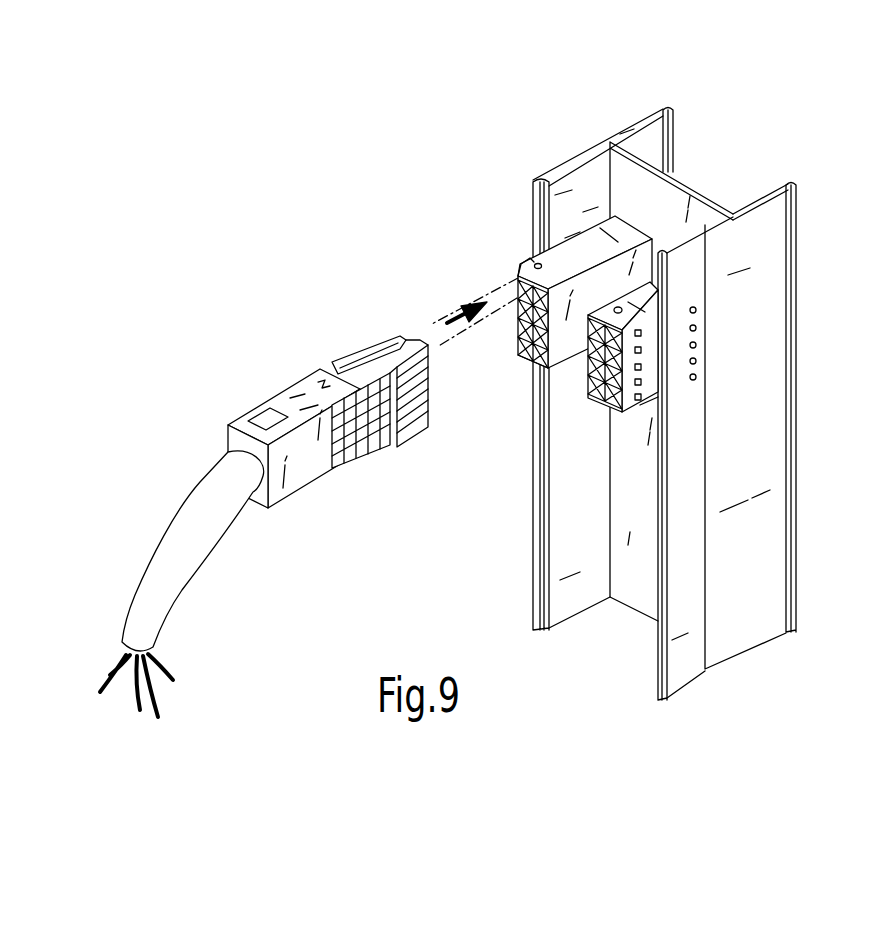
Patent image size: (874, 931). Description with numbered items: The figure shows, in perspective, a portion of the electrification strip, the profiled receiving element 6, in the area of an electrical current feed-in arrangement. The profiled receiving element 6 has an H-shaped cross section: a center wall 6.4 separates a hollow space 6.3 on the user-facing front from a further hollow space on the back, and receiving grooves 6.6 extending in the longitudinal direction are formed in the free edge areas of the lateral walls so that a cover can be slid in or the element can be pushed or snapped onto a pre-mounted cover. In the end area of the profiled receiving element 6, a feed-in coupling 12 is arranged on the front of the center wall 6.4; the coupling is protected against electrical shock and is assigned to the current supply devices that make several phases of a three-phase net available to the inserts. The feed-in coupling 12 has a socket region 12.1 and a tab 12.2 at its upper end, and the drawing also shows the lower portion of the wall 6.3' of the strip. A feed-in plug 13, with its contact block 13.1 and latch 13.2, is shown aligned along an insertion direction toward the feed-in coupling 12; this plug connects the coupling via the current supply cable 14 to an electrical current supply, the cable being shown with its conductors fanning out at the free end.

The profiled receiving element 6 is at (657, 404).
The hollow space 6.3 is at (649, 342).
The lower plate of housing frame 6.3' is at (656, 485).
The center wall 6.4 is at (638, 593).
The receiving grooves 6.6 is at (786, 184).
The feed-in coupling 12 is at (550, 285).
The socket contacts of connection module 12.1 is at (523, 358).
The latching tab of connection module 12.2 is at (536, 262).
The feed-in plug 13 is at (357, 386).
The contact block of plug 13.1 is at (427, 425).
The latch of plug 13.2 is at (377, 347).
The current supply cable 14 is at (207, 494).